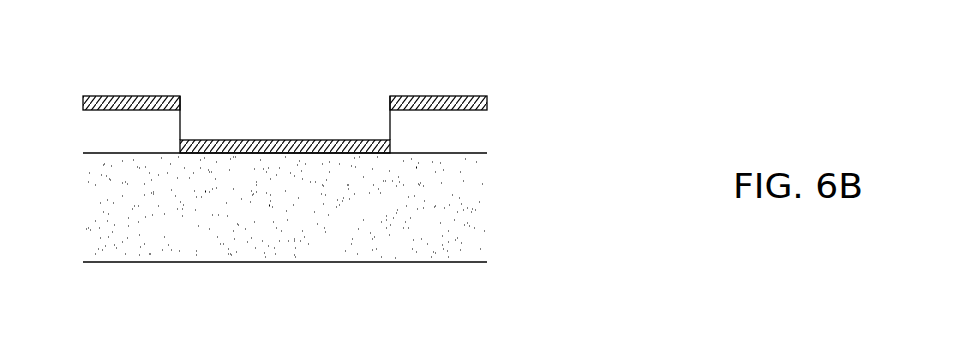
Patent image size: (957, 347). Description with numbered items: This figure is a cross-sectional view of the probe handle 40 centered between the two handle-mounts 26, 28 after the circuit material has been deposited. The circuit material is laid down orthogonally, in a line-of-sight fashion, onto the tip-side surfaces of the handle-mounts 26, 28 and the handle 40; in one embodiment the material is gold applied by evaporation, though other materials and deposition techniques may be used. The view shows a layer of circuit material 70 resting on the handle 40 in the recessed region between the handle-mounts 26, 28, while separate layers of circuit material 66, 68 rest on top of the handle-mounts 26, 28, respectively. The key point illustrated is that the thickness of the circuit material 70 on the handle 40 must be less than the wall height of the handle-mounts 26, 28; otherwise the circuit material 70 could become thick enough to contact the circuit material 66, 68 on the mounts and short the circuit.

The handle-mount 26 is at (108, 131).
The handle-mount 28 is at (465, 131).
The handle 40 is at (271, 225).
The circuit material 66 is at (133, 99).
The circuit material 68 is at (445, 97).
The circuit material 70 is at (272, 143).